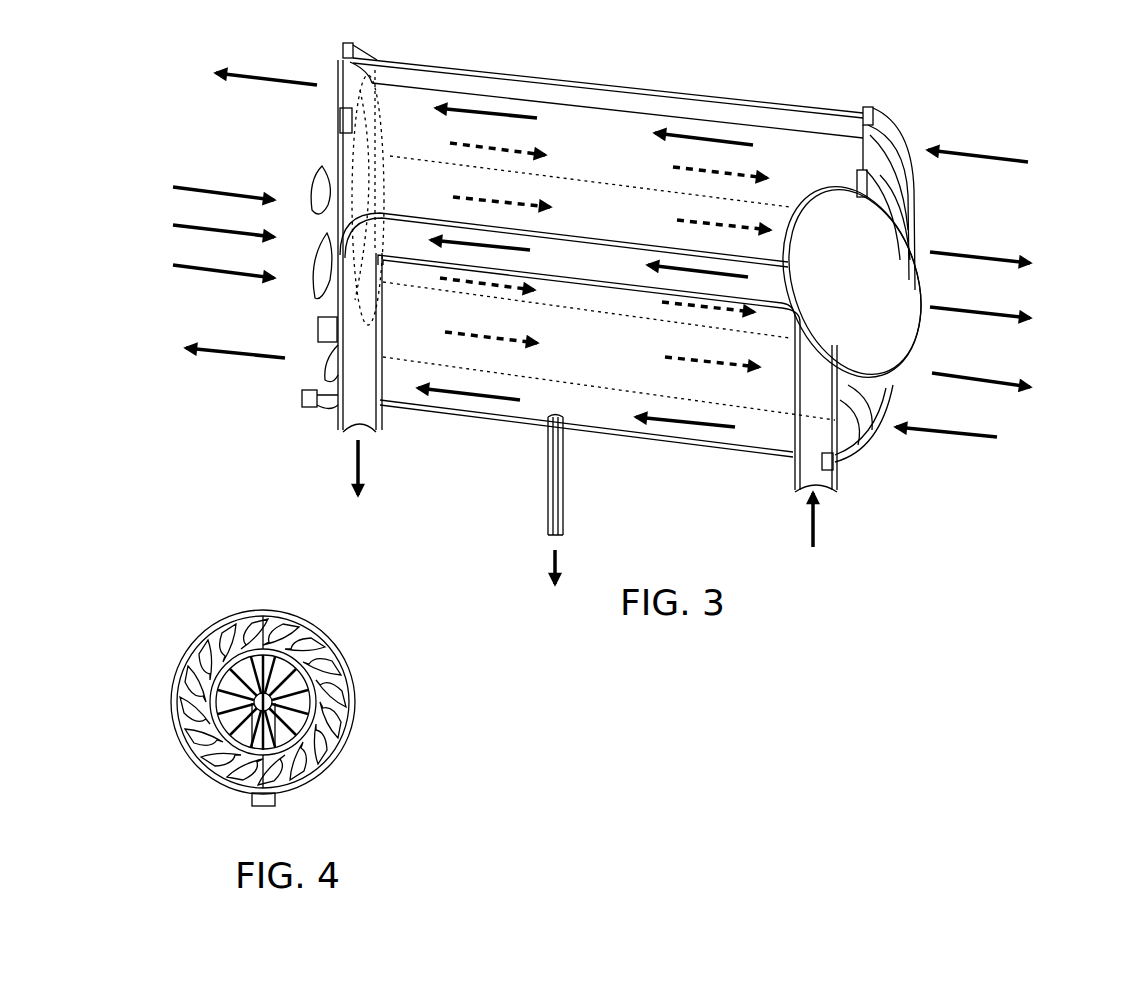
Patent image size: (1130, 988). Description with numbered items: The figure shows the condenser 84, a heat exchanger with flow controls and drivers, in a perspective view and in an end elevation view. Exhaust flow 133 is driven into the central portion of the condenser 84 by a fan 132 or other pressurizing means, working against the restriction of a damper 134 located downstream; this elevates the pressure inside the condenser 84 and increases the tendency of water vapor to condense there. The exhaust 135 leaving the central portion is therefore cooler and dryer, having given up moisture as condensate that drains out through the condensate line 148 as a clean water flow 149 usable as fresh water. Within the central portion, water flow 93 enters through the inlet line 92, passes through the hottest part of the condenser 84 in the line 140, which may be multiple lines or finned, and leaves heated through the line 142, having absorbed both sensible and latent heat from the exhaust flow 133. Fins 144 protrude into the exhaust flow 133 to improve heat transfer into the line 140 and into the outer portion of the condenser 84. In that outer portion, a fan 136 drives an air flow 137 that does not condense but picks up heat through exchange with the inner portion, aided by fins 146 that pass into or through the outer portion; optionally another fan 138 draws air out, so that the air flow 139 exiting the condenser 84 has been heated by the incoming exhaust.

In FIG. 3, the condenser 84 is at (862, 60).
In FIG. 4, the condenser 84 is at (142, 618).
In FIG. 3, the inlet line 92 is at (792, 478).
In FIG. 4, the inlet line 92 is at (277, 802).
In FIG. 3, the water flow 93 is at (362, 467).
In FIG. 3, the fan 132 is at (322, 172).
In FIG. 3, the exhaust flow 133 is at (212, 187).
In FIG. 3, the damper 134 is at (910, 347).
In FIG. 3, the exhaust 135 is at (1003, 312).
In FIG. 4, the exhaust 135 is at (225, 708).
In FIG. 3, the fan 136 is at (843, 448).
In FIG. 4, the fan 136 is at (227, 787).
In FIG. 3, the air flow 137 is at (983, 437).
In FIG. 4, the air flow 137 is at (183, 738).
In FIG. 3, the fan 138 is at (323, 373).
In FIG. 3, the air flow 139 is at (253, 75).
In FIG. 3, the line 140 is at (608, 257).
In FIG. 4, the line 140 is at (273, 733).
In FIG. 3, the line 142 is at (337, 420).
In FIG. 3, the fins 144 is at (770, 217).
In FIG. 4, the fins 144 is at (302, 705).
In FIG. 3, the fins 146 is at (614, 127).
In FIG. 4, the fins 146 is at (327, 657).
In FIG. 3, the condensate line 148 is at (563, 477).
In FIG. 3, the flow 149 is at (548, 560).